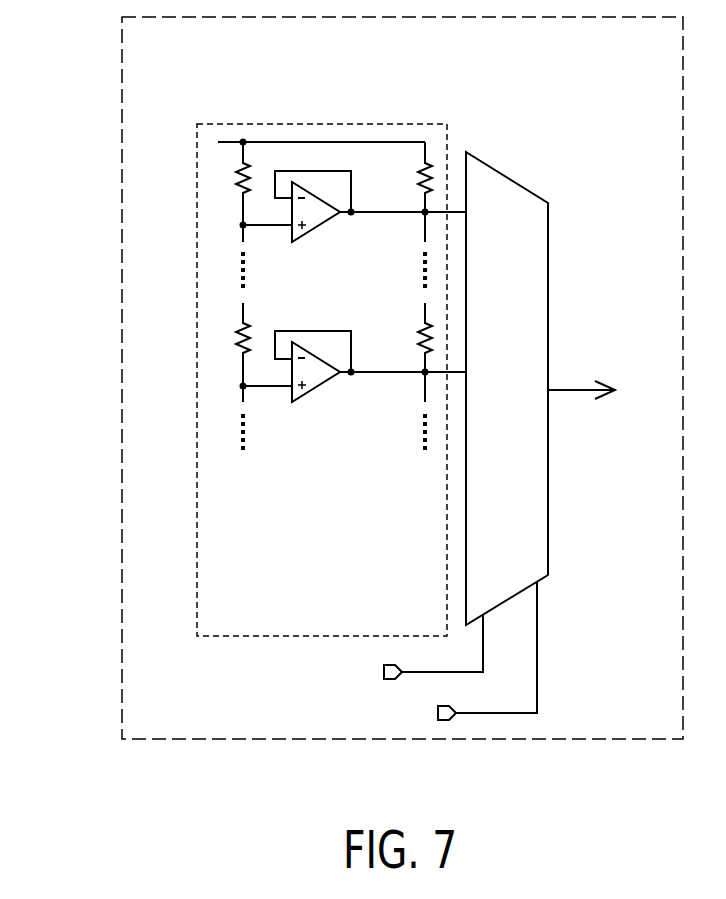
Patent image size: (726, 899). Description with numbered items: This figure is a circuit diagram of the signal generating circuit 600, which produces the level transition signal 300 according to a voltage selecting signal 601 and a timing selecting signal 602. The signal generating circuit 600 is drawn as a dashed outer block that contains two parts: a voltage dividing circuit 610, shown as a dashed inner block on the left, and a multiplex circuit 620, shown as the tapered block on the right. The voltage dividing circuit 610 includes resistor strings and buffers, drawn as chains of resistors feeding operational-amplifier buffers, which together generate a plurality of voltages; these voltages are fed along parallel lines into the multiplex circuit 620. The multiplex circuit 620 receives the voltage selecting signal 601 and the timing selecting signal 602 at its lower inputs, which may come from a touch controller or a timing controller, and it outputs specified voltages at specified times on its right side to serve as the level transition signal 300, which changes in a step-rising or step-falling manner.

The signal generating circuit 600 is at (121, 350).
The voltage dividing circuit 610 is at (279, 123).
The multiplex circuit 620 is at (507, 176).
The level transition signal 300 is at (605, 391).
The voltage selecting signal 601 is at (410, 651).
The timing selecting signal 602 is at (463, 655).